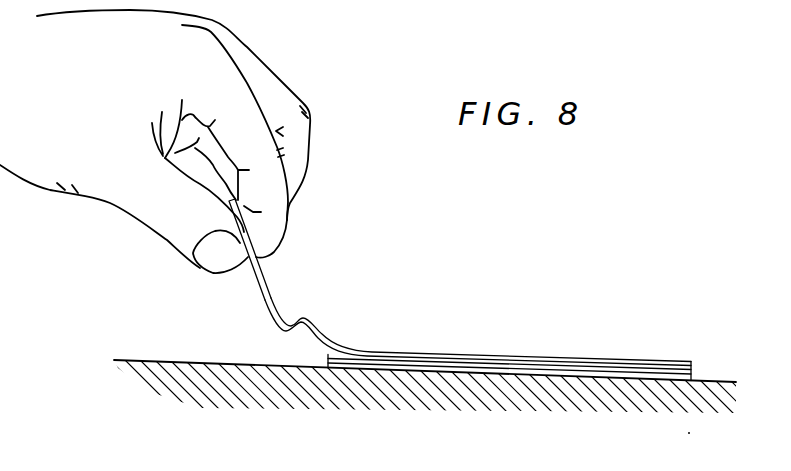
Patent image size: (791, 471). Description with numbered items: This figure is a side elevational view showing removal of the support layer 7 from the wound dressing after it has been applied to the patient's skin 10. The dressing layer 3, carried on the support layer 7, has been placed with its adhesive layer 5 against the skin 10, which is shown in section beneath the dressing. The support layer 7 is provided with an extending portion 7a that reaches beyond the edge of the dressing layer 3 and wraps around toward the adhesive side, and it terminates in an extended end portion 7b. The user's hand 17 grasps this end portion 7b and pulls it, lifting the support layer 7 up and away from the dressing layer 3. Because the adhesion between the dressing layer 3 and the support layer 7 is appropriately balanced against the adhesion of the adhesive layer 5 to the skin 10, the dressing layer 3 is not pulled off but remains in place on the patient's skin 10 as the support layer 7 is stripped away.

The hand 17 is at (270, 222).
The support layer 7 is at (460, 290).
The extending portion 7a is at (310, 323).
The end portion 7b is at (257, 257).
The adhesive layer 5 is at (472, 371).
The dressing layer 3 is at (577, 373).
The patient's skin 10 is at (710, 390).